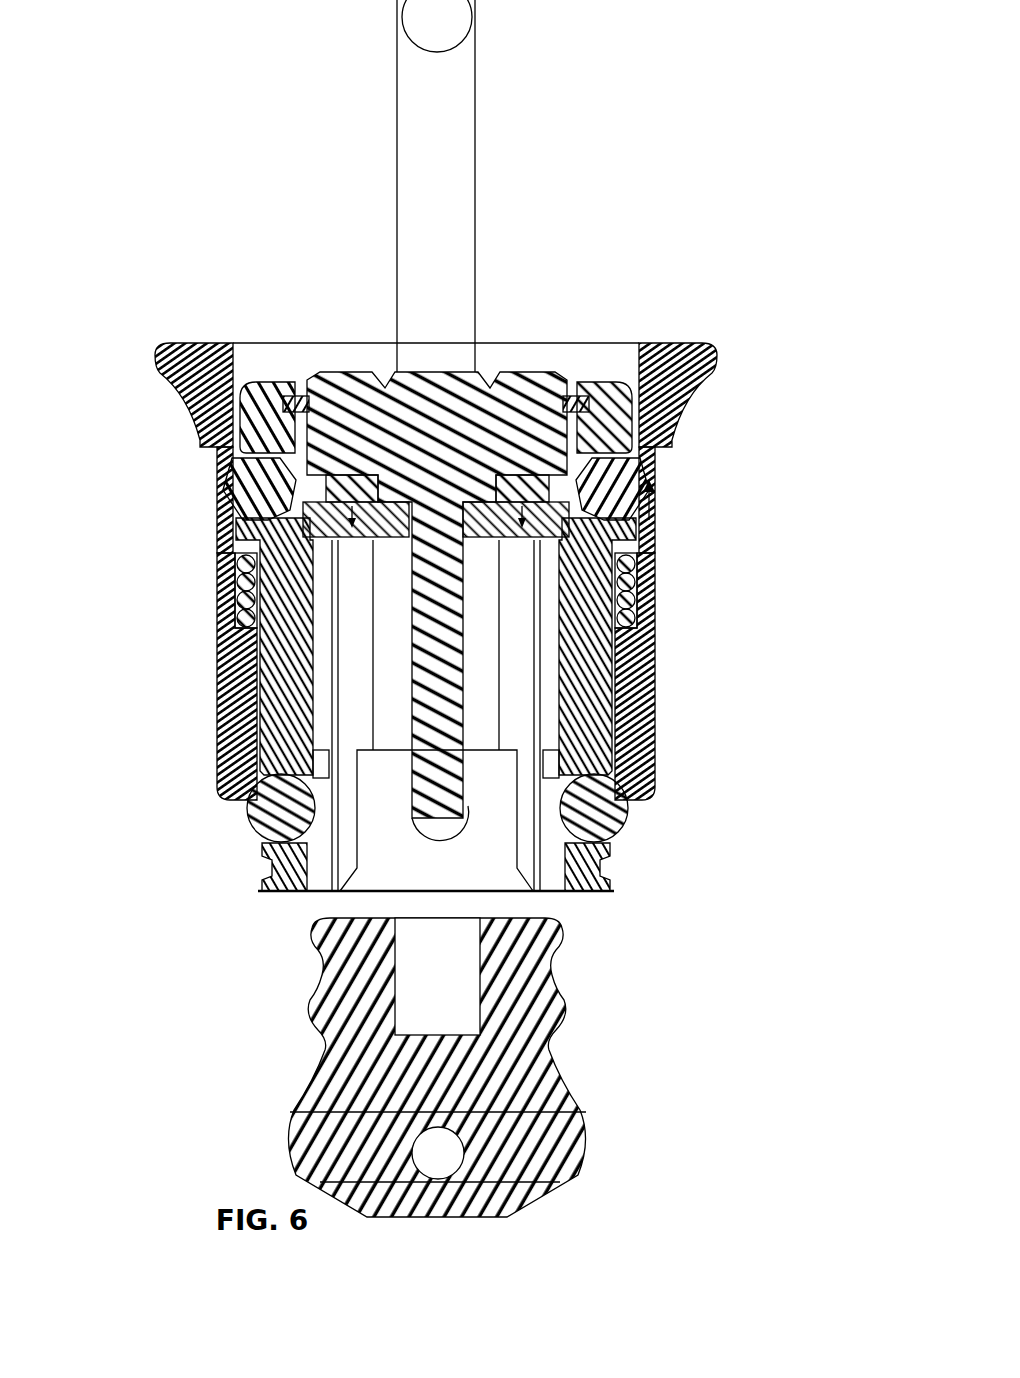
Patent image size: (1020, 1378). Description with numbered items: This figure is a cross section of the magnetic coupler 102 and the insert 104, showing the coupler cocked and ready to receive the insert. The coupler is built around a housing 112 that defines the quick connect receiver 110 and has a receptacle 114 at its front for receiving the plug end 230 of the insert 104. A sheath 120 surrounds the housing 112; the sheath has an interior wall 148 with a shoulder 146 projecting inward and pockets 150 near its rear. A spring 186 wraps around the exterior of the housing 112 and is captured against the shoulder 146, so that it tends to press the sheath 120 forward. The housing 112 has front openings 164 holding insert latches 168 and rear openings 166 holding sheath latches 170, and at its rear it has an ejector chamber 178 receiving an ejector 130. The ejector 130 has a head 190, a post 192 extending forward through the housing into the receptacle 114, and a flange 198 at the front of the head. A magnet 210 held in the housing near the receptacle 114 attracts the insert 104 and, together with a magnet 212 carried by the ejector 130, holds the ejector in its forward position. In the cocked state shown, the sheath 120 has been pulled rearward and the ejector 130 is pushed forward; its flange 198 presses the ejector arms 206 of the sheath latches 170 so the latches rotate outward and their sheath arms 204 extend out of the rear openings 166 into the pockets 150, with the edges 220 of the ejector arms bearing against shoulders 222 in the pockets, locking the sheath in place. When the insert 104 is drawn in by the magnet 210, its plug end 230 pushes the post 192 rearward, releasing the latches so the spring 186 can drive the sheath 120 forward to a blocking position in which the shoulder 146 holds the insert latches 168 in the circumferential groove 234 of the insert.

The magnetic coupler 102 is at (662, 250).
The insert 104 is at (622, 1046).
The quick connect receiver 110 is at (612, 895).
The housing 112 is at (632, 752).
The receptacle 114 is at (352, 888).
The sheath 120 is at (645, 677).
The ejector 130 is at (492, 410).
The shoulder 146 is at (630, 618).
The interior wall 148 is at (620, 713).
The pocket 150 is at (649, 492).
The front opening 164 is at (573, 845).
The rear opening 166 is at (228, 530).
The insert latch 168 is at (256, 815).
The sheath latch 170 is at (622, 478).
The ejector chamber 178 is at (568, 372).
The spring 186 is at (240, 612).
The head 190 is at (548, 395).
The post 192 is at (425, 692).
The flange 198 is at (642, 390).
The sheath arm 204 is at (588, 466).
The ejector arm 206 is at (600, 553).
The magnet 210 is at (390, 653).
The magnet 212 is at (366, 470).
The edge 220 is at (232, 470).
The shoulder 222 is at (232, 437).
The plug end 230 is at (533, 917).
The circumferential groove 234 is at (318, 973).